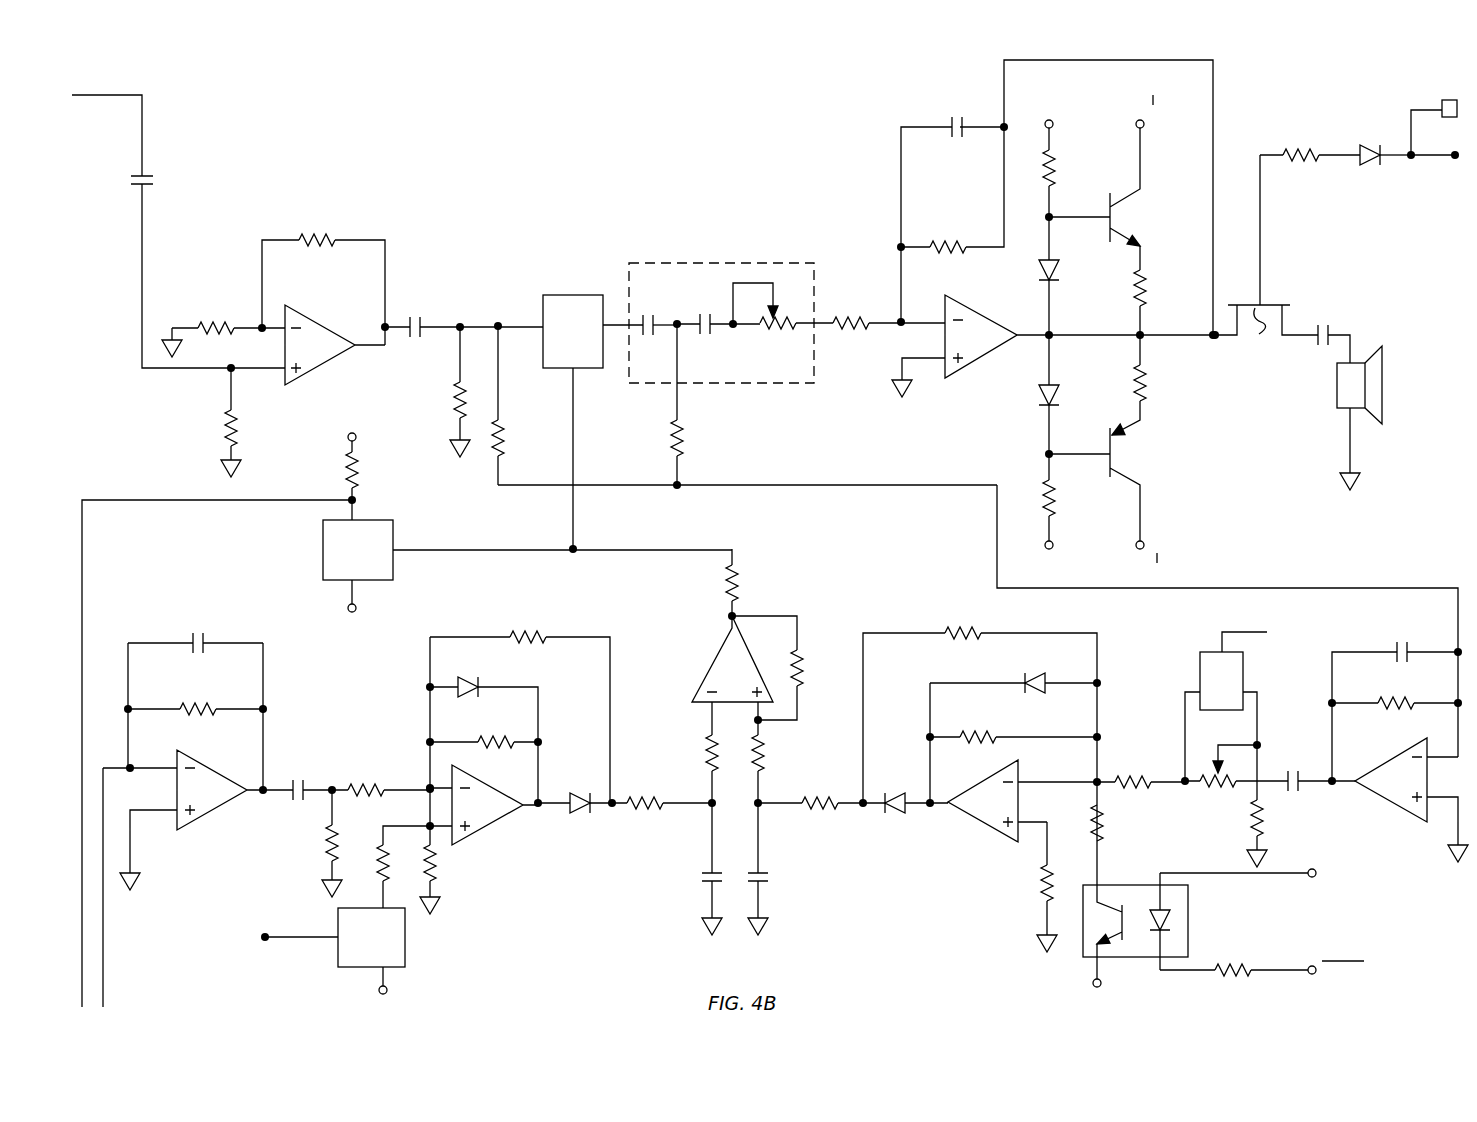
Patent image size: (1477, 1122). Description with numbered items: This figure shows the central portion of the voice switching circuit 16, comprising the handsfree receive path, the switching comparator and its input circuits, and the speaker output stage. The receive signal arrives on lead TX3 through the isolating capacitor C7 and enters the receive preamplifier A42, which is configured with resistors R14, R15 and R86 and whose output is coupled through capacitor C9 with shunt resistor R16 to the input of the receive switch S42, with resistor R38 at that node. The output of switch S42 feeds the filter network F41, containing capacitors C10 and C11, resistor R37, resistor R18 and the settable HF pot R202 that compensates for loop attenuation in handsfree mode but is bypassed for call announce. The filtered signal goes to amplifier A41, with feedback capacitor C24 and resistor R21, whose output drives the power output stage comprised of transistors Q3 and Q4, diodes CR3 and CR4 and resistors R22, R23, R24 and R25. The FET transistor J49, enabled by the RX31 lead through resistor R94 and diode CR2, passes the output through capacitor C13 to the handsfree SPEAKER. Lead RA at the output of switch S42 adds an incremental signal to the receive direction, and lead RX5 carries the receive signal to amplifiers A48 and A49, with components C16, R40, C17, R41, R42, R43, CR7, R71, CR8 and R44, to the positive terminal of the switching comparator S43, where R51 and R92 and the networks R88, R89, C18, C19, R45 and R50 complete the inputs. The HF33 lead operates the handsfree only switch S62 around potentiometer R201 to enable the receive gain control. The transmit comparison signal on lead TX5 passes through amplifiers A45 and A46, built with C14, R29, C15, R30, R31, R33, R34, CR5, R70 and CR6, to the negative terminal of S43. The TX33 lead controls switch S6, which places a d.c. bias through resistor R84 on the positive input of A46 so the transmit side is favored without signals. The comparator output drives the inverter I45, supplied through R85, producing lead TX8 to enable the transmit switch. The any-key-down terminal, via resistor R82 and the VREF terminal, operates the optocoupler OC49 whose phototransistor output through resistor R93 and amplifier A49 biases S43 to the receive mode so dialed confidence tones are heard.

The Tx 3 lead TX3 is at (145, 100).
The isolating capacitor C7 is at (156, 180).
The resistor R86 is at (211, 420).
The resistor R14 is at (214, 328).
The receive preamplifier A42 is at (316, 312).
The resistor R15 is at (323, 278).
The capacitor C9 is at (424, 316).
The resistor R16 is at (446, 392).
The resistor R38 is at (519, 403).
The receive switch S42 is at (590, 370).
The voice switching circuit 16 is at (720, 300).
The capacitor C10 is at (657, 312).
The capacitor C11 is at (707, 312).
The resistor R37 is at (698, 406).
The HF pot R202 is at (783, 318).
The resistor R18 is at (889, 309).
The filter network F41 is at (775, 383).
The lead RA is at (620, 485).
The lead Rx 5 RX5 is at (880, 487).
The amplifier A41 is at (985, 360).
The capacitor C24 is at (1059, 199).
The resistor R21 is at (950, 190).
The resistor R22 is at (1063, 156).
The transistor Q3 is at (1111, 169).
The resistor R23 is at (1160, 292).
The diode CR3 is at (1071, 276).
The diode CR4 is at (1071, 396).
The resistor R25 is at (1068, 512).
The transistor Q4 is at (1112, 488).
The resistor R24 is at (1162, 370).
The FET transistor J49 is at (1264, 256).
The capacitor C13 is at (1328, 330).
The handsfree speaker SPEAKER is at (1405, 418).
The resistor R94 is at (1310, 143).
The diode CR2 is at (1383, 168).
The Rx 31 lead RX31 is at (1438, 154).
The resistor R85 is at (365, 455).
The lead Tx 8 TX8 is at (84, 607).
The inverter I45 is at (398, 578).
The capacitor C14 is at (195, 631).
The resistor R29 is at (195, 698).
The amplifier A45 is at (218, 812).
The lead Tx 5 TX5 is at (104, 975).
The capacitor C15 is at (299, 777).
The resistor R30 is at (313, 843).
The resistor R31 is at (383, 775).
The resistor R84 is at (378, 852).
The resistor R33 is at (449, 870).
The switch S6 is at (335, 968).
The Tx 33 lead TX33 is at (251, 941).
The amplifier A46 is at (505, 822).
The resistor R34 is at (520, 715).
The diode CR5 is at (482, 727).
The resistor R70 is at (484, 728).
The diode CR6 is at (577, 815).
The resistor R45 is at (664, 817).
The resistor R88 is at (690, 752).
The resistor R89 is at (779, 754).
The capacitor C18 is at (697, 869).
The capacitor C19 is at (779, 869).
The resistor R50 is at (812, 815).
The resistor R51 is at (753, 584).
The switching comparator S43 is at (720, 650).
The resistor R92 is at (788, 668).
The diode CR8 is at (898, 789).
The amplifier A49 is at (945, 812).
The resistor R43 is at (980, 702).
The diode CR7 is at (1015, 725).
The resistor R71 is at (1013, 784).
The resistor R42 is at (1139, 768).
The resistor R93 is at (1120, 823).
The resistor R44 is at (1024, 887).
The optocoupler OC49 is at (1190, 905).
The reference voltage terminal VREF is at (1262, 875).
The resistor R82 is at (1275, 959).
The potentiometer R201 is at (1234, 777).
The receive lead handsfree only switch S62 is at (1245, 660).
The HF 33 lead HF33 is at (1246, 627).
The resistor R41 is at (1276, 833).
The capacitor C17 is at (1316, 768).
The amplifier A48 is at (1367, 790).
The capacitor C16 is at (1397, 698).
The resistor R40 is at (1395, 714).